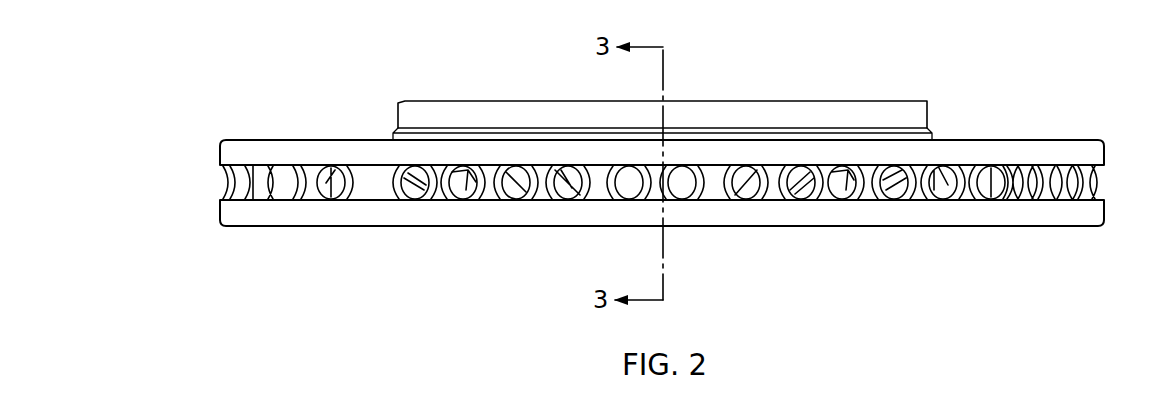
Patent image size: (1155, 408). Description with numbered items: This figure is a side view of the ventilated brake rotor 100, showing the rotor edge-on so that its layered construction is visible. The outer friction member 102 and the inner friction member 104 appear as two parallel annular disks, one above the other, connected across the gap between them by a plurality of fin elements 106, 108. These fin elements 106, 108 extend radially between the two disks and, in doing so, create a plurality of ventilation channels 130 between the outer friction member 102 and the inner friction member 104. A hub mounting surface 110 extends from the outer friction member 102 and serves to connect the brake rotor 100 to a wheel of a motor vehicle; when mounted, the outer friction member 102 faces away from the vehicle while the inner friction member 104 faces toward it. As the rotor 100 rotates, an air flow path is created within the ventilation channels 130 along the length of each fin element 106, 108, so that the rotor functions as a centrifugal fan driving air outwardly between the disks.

The ventilated brake rotor 100 is at (1030, 56).
The outer friction member 102 is at (1083, 217).
The inner friction member 104 is at (1077, 147).
The fin element 106 is at (943, 245).
The fin element 108 is at (993, 253).
The hub mounting surface 110 is at (833, 108).
The ventilation channel 130 is at (697, 247).